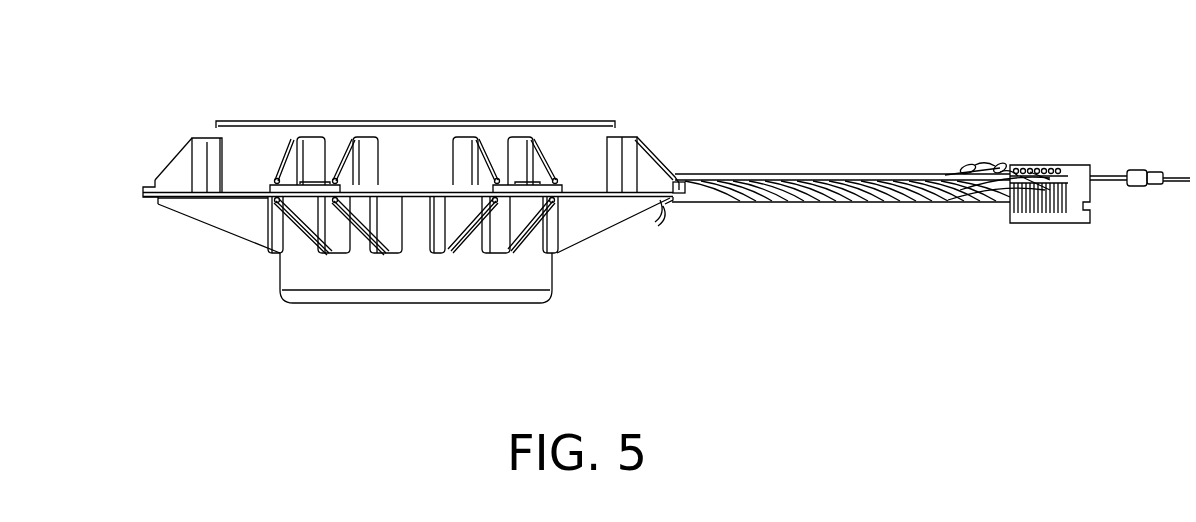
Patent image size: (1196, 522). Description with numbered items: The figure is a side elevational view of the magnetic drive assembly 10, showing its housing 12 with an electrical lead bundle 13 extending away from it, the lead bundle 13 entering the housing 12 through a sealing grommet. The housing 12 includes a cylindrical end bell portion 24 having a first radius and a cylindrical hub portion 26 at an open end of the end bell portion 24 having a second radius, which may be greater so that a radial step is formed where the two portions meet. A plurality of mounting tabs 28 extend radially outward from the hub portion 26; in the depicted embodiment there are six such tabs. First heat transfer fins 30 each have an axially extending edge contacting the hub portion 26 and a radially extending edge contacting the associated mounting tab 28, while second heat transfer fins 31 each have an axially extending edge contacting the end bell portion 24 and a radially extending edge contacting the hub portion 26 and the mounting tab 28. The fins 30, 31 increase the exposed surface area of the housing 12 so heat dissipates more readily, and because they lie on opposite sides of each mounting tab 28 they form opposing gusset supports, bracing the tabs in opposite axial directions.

The magnetic drive assembly 10 is at (530, 80).
The housing 12 is at (274, 264).
The electrical lead bundle 13 is at (887, 175).
The end bell portion 24 is at (557, 275).
The hub portion 26 is at (250, 143).
The mounting tab 28 is at (150, 187).
The first heat transfer fin 30 is at (178, 155).
The second heat transfer fin 31 is at (217, 228).